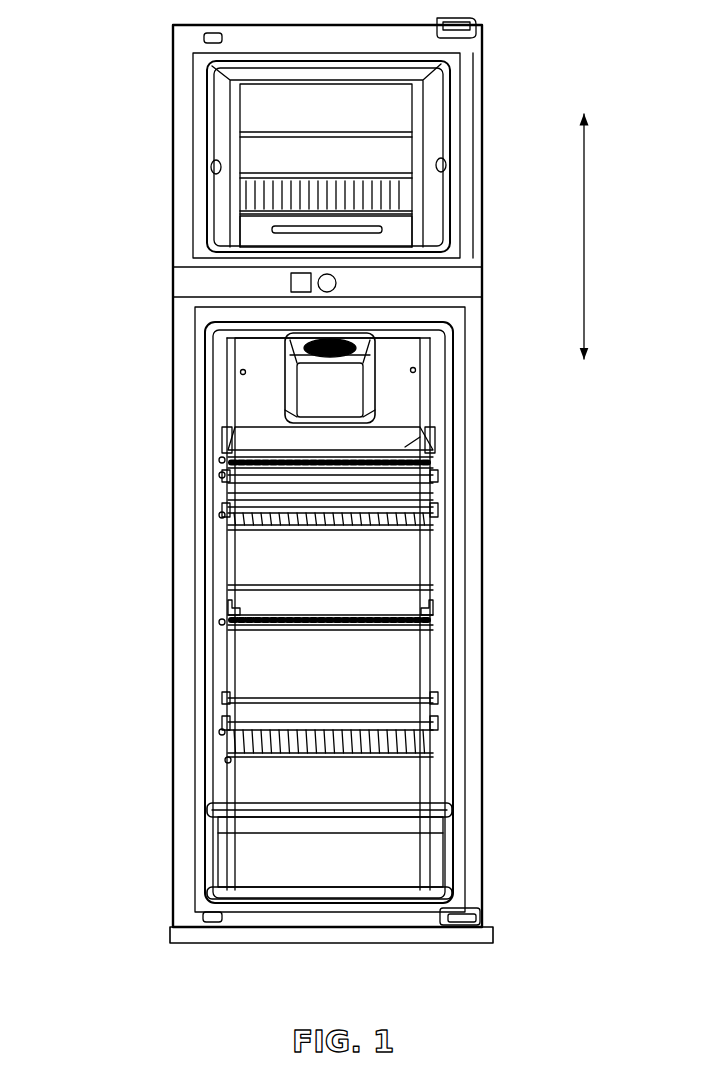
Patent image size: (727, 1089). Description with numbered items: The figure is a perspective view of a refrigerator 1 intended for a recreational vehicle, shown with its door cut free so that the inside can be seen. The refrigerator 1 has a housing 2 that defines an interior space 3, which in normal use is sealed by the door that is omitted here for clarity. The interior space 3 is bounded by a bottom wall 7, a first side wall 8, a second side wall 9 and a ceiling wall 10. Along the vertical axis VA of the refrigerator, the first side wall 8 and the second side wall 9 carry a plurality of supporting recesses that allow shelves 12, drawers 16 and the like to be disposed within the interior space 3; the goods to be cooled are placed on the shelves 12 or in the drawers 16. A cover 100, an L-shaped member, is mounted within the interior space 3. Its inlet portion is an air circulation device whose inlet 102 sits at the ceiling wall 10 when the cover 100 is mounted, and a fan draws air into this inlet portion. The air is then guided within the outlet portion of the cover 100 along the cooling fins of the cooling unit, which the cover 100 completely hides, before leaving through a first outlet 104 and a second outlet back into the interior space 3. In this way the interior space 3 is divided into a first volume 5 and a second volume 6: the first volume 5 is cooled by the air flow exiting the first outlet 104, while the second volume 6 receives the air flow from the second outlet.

The refrigerator 1 is at (80, 151).
The housing 2 is at (160, 468).
The interior space 3 is at (418, 564).
The first volume 5 is at (246, 393).
The second volume 6 is at (243, 574).
The bottom wall 7 is at (235, 891).
The first side wall 8 is at (450, 641).
The second side wall 9 is at (210, 651).
The ceiling wall 10 is at (443, 340).
The shelves 12 is at (237, 438).
The drawers 16 is at (242, 830).
The cover 100 is at (300, 380).
The inlet 102 is at (375, 360).
The first outlet 104 is at (425, 428).
The vertical axis VA is at (601, 236).